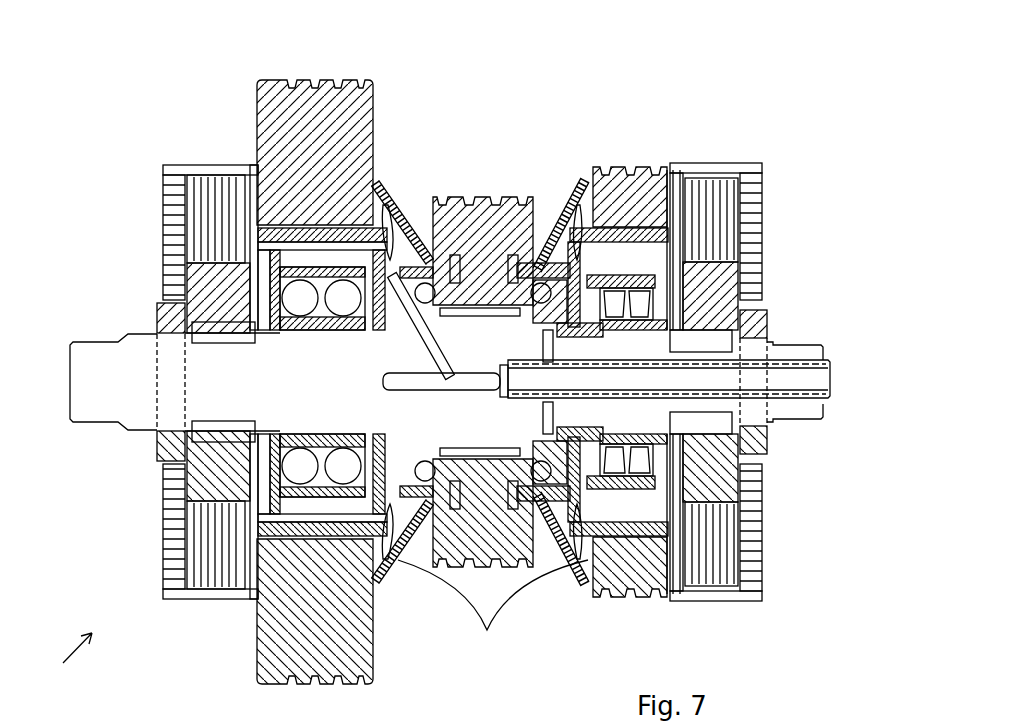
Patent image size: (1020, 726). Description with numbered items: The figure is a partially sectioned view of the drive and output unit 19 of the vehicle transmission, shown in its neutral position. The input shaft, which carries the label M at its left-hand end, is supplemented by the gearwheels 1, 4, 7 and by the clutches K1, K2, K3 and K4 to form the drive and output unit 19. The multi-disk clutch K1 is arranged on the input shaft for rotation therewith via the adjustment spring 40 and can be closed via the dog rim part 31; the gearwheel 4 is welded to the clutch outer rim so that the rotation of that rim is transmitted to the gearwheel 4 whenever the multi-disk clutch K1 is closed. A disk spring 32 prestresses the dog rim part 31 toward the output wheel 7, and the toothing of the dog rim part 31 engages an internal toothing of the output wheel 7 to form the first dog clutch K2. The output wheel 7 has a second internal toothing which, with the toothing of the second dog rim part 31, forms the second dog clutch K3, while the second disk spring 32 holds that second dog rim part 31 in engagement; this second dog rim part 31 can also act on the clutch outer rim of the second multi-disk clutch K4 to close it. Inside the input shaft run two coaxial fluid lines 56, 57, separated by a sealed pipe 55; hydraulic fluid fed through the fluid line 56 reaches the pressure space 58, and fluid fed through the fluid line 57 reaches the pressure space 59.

The gearwheel 1 is at (630, 573).
The gearwheel 4 is at (362, 630).
The output wheel 7 is at (450, 213).
The drive and output unit 19 is at (68, 667).
The dog rim part 31 is at (390, 190).
The disk spring 32 is at (493, 614).
The adjustment spring 40 is at (223, 335).
The pipe 55 is at (825, 390).
The fluid line 56 is at (447, 380).
The fluid line 57 is at (533, 398).
The pressure space 58 is at (390, 327).
The pressure space 59 is at (568, 310).
The multi-disk clutch K1 is at (193, 183).
The first dog clutch K2 is at (427, 222).
The second dog clutch K3 is at (542, 217).
The second multi-disk clutch K4 is at (708, 178).
The motor input shaft M is at (95, 350).